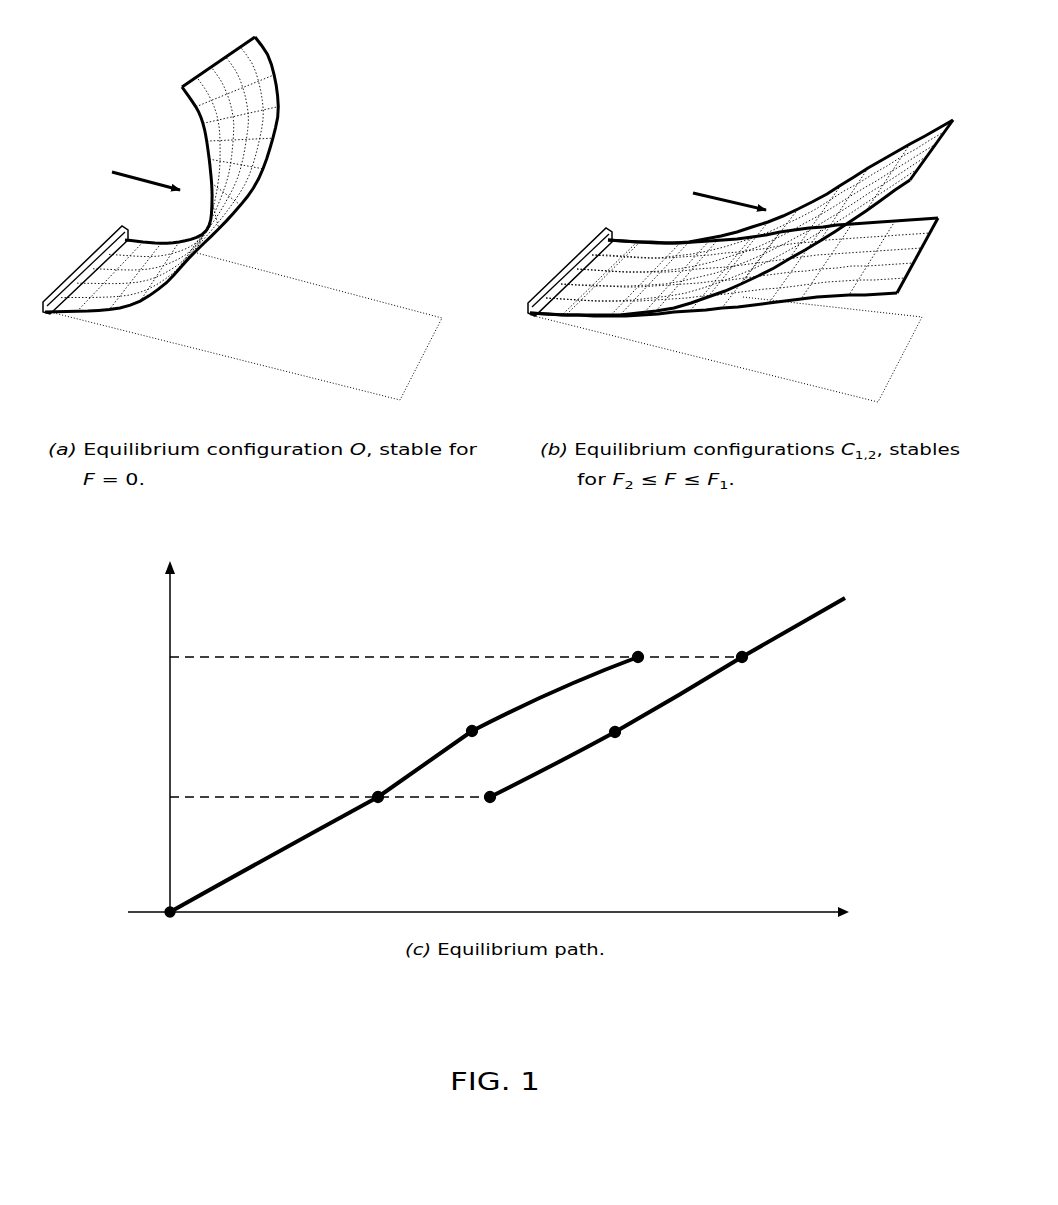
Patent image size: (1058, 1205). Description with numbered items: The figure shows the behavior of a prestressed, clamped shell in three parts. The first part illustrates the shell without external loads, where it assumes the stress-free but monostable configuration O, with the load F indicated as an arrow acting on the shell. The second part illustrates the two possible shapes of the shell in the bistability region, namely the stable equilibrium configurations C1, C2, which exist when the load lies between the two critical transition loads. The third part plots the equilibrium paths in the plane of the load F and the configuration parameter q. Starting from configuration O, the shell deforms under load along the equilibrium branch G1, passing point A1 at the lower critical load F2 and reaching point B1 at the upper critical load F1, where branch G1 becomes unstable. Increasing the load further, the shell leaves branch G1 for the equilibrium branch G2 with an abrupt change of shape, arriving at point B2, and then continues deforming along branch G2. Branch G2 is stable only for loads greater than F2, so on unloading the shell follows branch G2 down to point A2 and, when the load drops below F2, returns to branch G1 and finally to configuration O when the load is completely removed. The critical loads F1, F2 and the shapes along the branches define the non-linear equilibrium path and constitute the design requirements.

The configuration O is at (242, 209).
The load F is at (146, 174).
The equilibrium configuration C1 is at (741, 205).
The equilibrium configuration C2 is at (733, 310).
The point A1 is at (366, 784).
The point A2 is at (477, 784).
The point B1 is at (623, 644).
The point B2 is at (730, 644).
The critical transition load F1 is at (441, 658).
The critical transition load F2 is at (315, 798).
The equilibrium branch Γ1 G1 is at (404, 784).
The equilibrium branch Γ2 G2 is at (667, 697).
The configuration parameter q is at (500, 913).